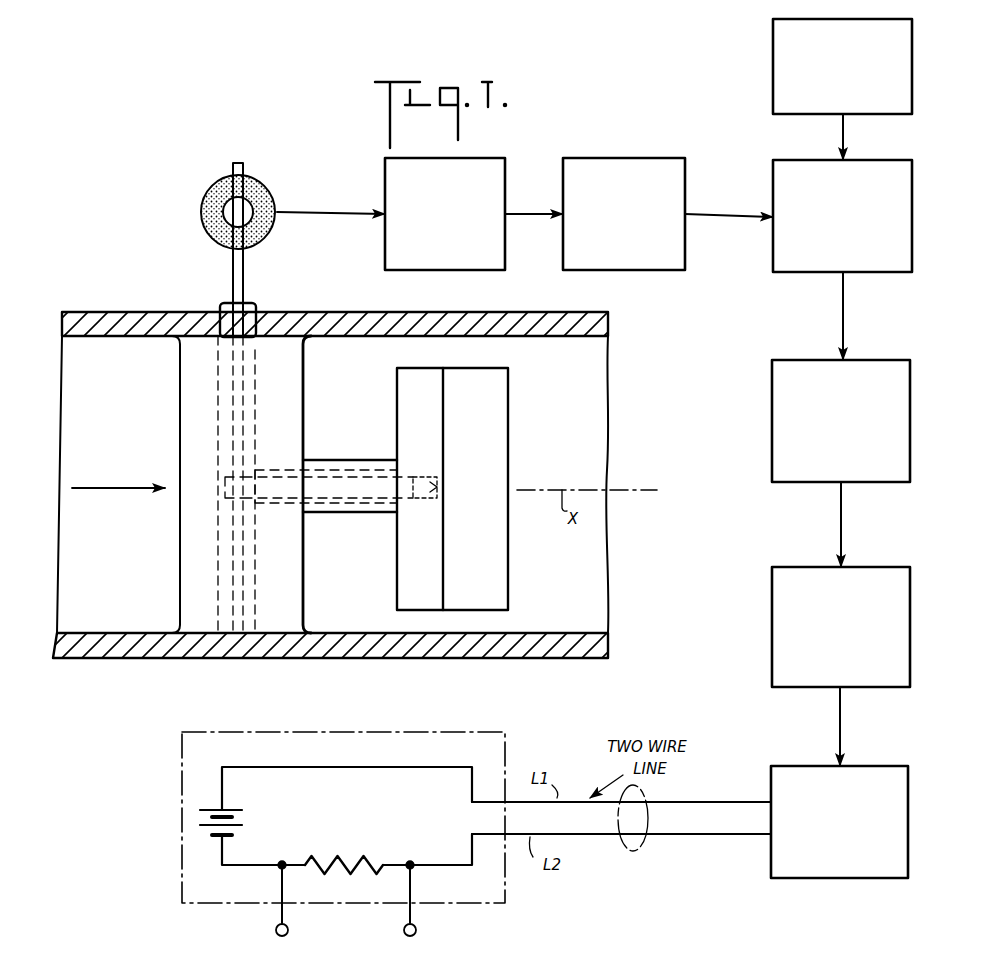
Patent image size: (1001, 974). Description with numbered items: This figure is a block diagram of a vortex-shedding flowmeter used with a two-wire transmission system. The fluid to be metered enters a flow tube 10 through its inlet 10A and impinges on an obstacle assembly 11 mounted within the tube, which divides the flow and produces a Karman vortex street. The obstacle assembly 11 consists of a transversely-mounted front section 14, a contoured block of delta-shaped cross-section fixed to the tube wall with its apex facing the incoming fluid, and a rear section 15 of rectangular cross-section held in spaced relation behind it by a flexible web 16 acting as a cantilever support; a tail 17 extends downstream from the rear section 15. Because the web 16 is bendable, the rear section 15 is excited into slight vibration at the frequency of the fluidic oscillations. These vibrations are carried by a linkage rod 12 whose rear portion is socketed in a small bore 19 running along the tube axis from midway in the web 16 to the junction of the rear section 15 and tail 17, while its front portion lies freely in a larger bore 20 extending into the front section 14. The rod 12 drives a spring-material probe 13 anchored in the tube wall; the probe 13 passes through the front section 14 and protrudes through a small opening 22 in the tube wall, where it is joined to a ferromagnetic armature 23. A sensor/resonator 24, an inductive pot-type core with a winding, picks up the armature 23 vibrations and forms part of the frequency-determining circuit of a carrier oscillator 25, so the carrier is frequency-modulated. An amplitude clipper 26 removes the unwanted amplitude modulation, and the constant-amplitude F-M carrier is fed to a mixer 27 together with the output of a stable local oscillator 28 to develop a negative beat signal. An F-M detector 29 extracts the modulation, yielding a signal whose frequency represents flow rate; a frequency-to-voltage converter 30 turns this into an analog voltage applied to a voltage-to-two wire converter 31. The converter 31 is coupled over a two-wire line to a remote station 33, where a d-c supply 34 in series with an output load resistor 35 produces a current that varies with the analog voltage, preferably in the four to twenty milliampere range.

The flow tube 10 is at (130, 312).
The inlet 10A is at (118, 563).
The obstacle assembly 11 is at (317, 435).
The rod 12 is at (363, 513).
The probe 13 is at (243, 413).
The front section 14 is at (185, 403).
The rear section 15 is at (408, 368).
The flexible web 16 is at (320, 513).
The tail 17 is at (500, 453).
The bore 19 is at (427, 477).
The bore 20 is at (327, 470).
The opening 22 is at (220, 305).
The ferromagnetic armature 23 is at (245, 275).
The sensor/resonator 24 is at (212, 190).
The carrier oscillator 25 is at (497, 157).
The amplitude clipper 26 is at (682, 166).
The mixer 27 is at (770, 270).
The local oscillator 28 is at (777, 108).
The F-M detector 29 is at (772, 368).
The frequency-to-voltage converter 30 is at (772, 572).
The voltage-to-two wire converter 31 is at (768, 877).
The remote station 33 is at (505, 903).
The d-c supply 34 is at (240, 817).
The output load resistor 35 is at (360, 857).